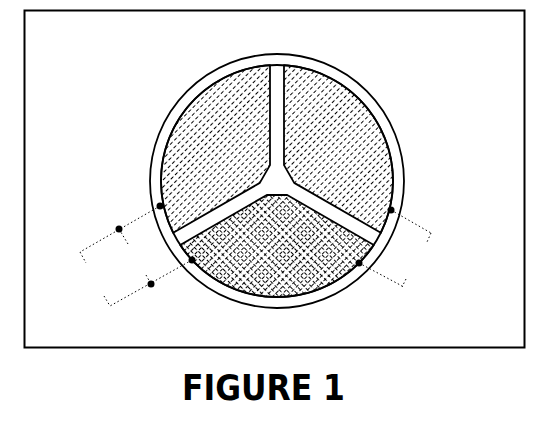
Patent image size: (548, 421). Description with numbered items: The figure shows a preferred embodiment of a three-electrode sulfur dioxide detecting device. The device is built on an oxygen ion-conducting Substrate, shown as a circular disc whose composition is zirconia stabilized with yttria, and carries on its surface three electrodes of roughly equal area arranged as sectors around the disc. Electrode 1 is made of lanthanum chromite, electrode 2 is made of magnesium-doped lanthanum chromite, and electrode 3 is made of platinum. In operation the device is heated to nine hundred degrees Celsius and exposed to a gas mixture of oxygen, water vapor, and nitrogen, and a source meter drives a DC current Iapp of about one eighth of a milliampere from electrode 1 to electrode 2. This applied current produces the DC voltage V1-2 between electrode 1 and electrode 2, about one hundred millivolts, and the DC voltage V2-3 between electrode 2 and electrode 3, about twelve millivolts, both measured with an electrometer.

The electrode 1 is at (207, 78).
The electrode 2 is at (331, 293).
The electrode 3 is at (357, 88).
The oxygen ion-conducting substrate Substrate is at (327, 57).
The DC voltage V1-2 is at (138, 255).
The DC voltage V2-3 is at (395, 247).
The applied DC current Iapp is at (95, 279).